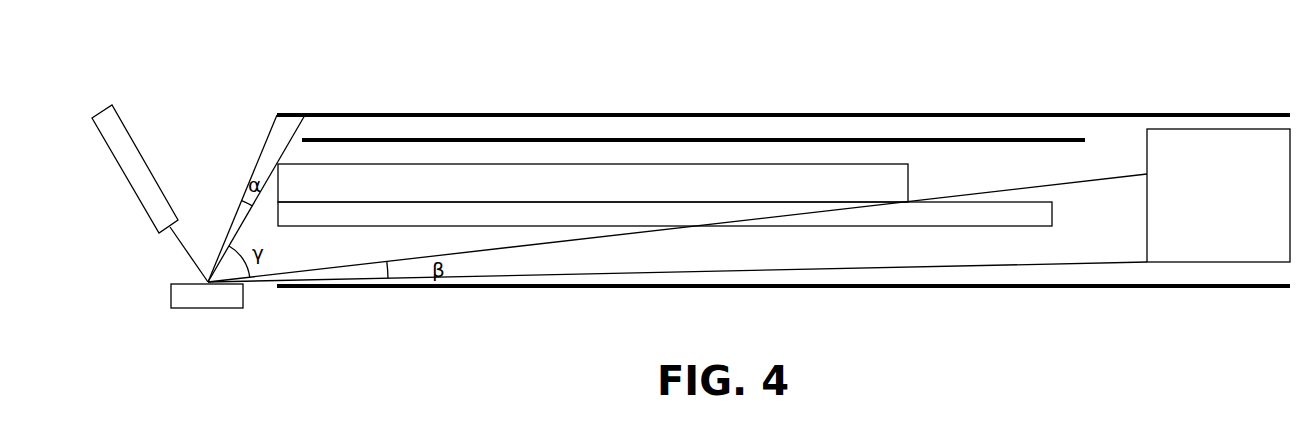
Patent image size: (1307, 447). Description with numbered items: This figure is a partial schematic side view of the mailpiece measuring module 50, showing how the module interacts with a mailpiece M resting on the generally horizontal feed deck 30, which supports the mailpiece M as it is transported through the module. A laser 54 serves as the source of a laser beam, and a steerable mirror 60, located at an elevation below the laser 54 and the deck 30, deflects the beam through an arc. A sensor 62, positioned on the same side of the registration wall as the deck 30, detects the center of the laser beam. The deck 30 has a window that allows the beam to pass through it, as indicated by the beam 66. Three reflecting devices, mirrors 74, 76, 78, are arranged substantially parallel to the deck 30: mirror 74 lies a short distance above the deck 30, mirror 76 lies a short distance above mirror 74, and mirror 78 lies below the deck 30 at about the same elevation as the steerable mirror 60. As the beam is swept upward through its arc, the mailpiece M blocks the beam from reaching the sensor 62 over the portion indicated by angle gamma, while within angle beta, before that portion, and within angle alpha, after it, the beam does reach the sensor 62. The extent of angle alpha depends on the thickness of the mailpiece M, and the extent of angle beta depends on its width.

The feed deck 30 is at (893, 226).
The mailpiece measuring module 50 is at (1050, 68).
The laser 54 is at (145, 155).
The steerable mirror 60 is at (203, 310).
The sensor 62 is at (1192, 157).
The laser beam passing through the deck 66 is at (597, 238).
The mirror 74 is at (685, 138).
The mirror 76 is at (556, 113).
The mirror 78 is at (957, 287).
The mailpiece M is at (910, 177).